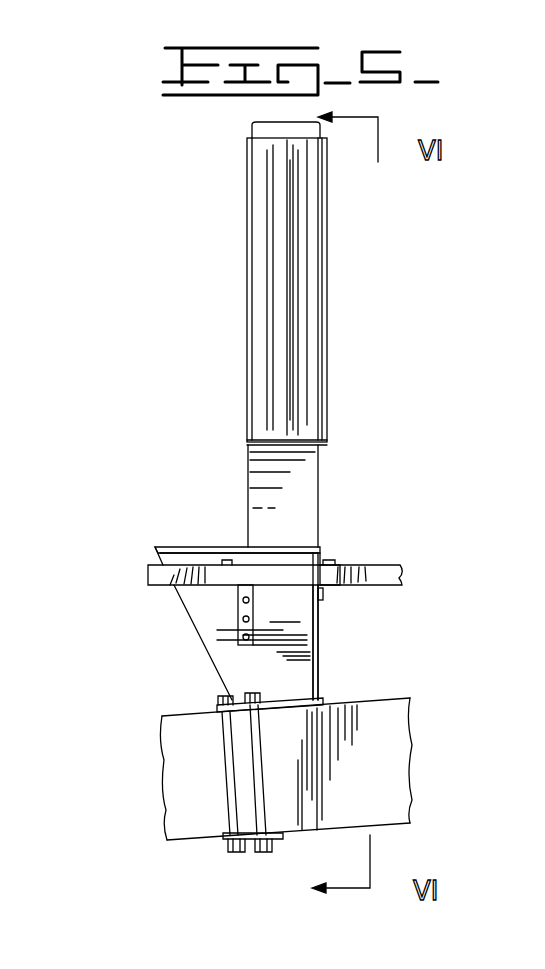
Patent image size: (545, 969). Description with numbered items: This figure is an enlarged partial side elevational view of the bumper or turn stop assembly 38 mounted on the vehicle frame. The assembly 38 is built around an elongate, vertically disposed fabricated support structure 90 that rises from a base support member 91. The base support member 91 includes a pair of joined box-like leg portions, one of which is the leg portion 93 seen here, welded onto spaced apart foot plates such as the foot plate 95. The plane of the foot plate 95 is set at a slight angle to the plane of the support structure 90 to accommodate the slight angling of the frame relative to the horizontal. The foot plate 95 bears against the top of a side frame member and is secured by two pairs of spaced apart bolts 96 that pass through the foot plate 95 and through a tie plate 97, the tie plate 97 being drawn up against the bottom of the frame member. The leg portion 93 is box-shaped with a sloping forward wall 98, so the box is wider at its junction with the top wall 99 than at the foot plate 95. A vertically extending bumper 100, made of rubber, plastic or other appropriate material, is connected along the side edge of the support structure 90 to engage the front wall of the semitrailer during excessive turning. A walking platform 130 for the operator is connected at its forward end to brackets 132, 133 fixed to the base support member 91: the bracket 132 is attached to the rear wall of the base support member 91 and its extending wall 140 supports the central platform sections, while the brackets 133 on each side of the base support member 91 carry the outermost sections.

The turn stop assembly 38 is at (372, 537).
The support structure 90 is at (302, 486).
The base support member 91 is at (182, 553).
The leg portion 93 is at (287, 677).
The foot plate 95 is at (317, 697).
The bolts 96 is at (228, 737).
The tie plate 97 is at (250, 840).
The forward walls 98 is at (218, 668).
The top wall 99 is at (228, 547).
The bumpers 100 is at (295, 302).
The walking platform 130 is at (408, 582).
The bracket 132 is at (323, 598).
The brackets 133 is at (238, 605).
The extending wall 140 is at (330, 572).